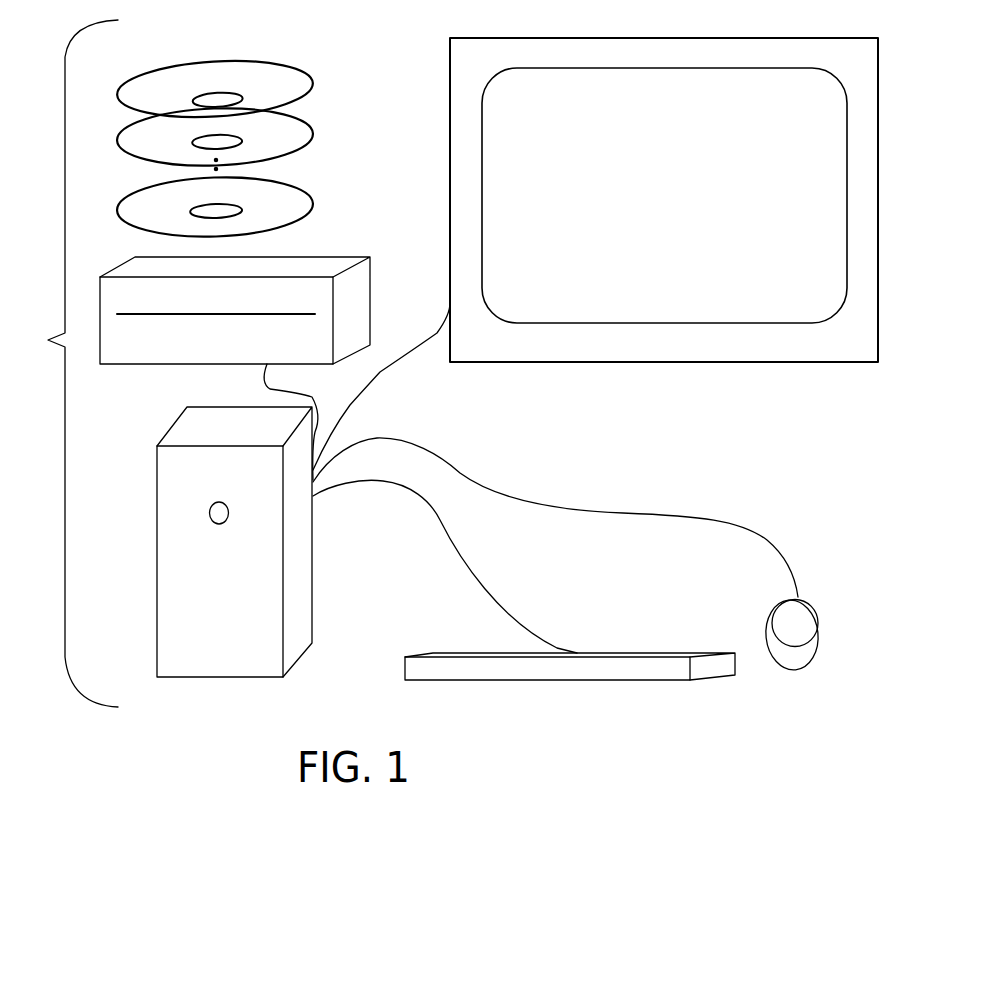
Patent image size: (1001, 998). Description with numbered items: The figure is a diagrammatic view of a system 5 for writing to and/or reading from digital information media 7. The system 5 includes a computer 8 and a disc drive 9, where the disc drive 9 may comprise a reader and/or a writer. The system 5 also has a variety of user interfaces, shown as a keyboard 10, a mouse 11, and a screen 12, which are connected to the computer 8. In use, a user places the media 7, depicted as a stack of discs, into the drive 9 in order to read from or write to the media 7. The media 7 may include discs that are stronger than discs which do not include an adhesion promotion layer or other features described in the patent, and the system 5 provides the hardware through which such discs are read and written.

The system 5 is at (71, 363).
The digital information media 7 is at (278, 92).
The computer 8 is at (182, 645).
The disc drive 9 is at (355, 315).
The keyboard 10 is at (548, 680).
The mouse 11 is at (783, 657).
The screen 12 is at (678, 352).